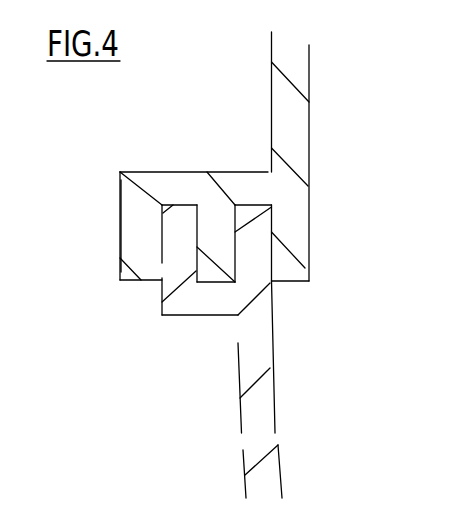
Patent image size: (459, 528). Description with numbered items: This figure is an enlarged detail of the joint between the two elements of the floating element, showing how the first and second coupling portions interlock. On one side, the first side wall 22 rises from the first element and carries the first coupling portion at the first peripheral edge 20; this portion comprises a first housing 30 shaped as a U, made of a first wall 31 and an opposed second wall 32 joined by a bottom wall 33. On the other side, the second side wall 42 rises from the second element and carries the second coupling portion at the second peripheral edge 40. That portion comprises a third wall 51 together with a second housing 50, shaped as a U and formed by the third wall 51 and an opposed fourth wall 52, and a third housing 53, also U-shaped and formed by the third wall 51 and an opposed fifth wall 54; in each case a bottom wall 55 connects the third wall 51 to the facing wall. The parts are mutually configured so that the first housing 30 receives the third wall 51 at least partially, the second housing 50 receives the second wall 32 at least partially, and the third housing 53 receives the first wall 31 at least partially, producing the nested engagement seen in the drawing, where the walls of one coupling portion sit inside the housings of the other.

The first peripheral edge 20 is at (240, 323).
The first side wall 22 is at (270, 478).
The first housing 30 is at (178, 318).
The first wall 31 is at (176, 266).
The second wall 32 is at (273, 290).
The bottom wall 33 is at (211, 301).
The second peripheral edge 40 is at (276, 171).
The second side wall 42 is at (295, 61).
The second housing 50 is at (275, 213).
The third wall 51 is at (217, 237).
The fourth wall 52 is at (295, 242).
The third housing 53 is at (113, 170).
The fifth wall 54 is at (143, 248).
The bottom wall 55 is at (181, 178).